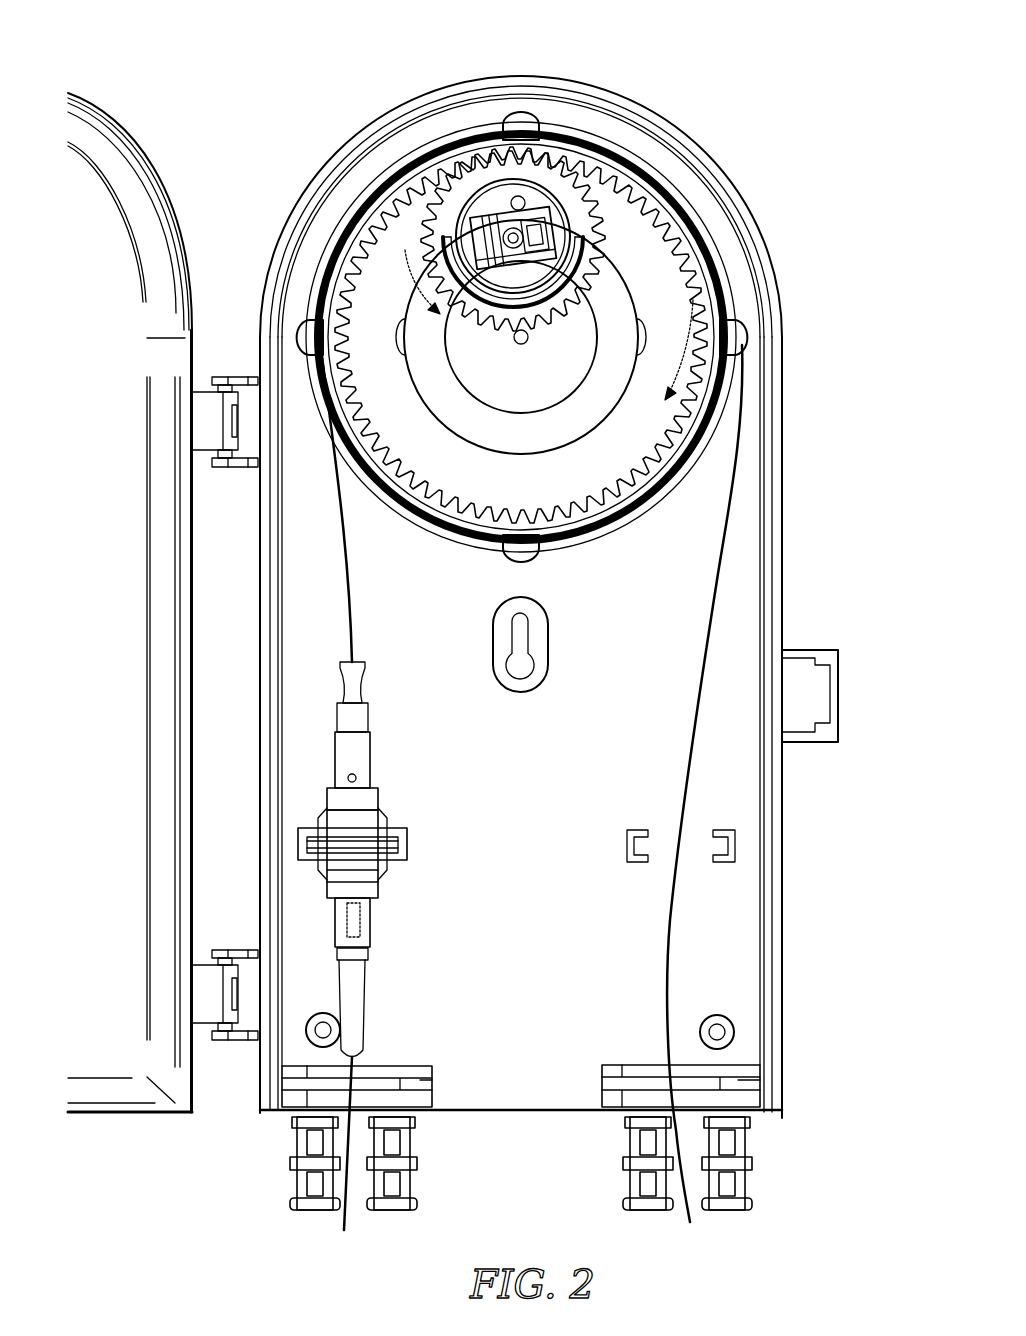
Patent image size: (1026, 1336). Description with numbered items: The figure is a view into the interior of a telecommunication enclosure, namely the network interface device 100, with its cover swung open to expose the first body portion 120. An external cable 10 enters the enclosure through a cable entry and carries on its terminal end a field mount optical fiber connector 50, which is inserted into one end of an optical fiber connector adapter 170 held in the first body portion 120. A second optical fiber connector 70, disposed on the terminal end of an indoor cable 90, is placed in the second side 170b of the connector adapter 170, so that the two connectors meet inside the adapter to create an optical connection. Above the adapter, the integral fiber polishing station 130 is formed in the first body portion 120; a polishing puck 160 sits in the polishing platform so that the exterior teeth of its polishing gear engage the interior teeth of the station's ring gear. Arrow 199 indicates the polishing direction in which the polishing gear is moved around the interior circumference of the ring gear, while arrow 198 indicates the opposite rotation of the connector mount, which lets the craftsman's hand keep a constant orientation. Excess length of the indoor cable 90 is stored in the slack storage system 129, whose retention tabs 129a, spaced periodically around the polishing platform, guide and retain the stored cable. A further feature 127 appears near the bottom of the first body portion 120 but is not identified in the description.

The network interface device 100 is at (203, 53).
The first body portion 120 is at (792, 909).
The mounting plate 127 is at (383, 1078).
The slack storage system 129 is at (727, 272).
The retention tabs 129a is at (514, 120).
The integral fiber polishing station 130 is at (634, 250).
The polishing puck 160 is at (585, 193).
The arrow 198 is at (334, 254).
The arrow 199 is at (724, 381).
The indoor cable 90 is at (355, 588).
The second optical fiber connector 70 is at (372, 748).
The optical fiber connector adapter 170 is at (388, 889).
The second side of the connector adapter 170b is at (380, 786).
The field mount optical fiber connector 50 is at (377, 931).
The external cable 10 is at (345, 1177).